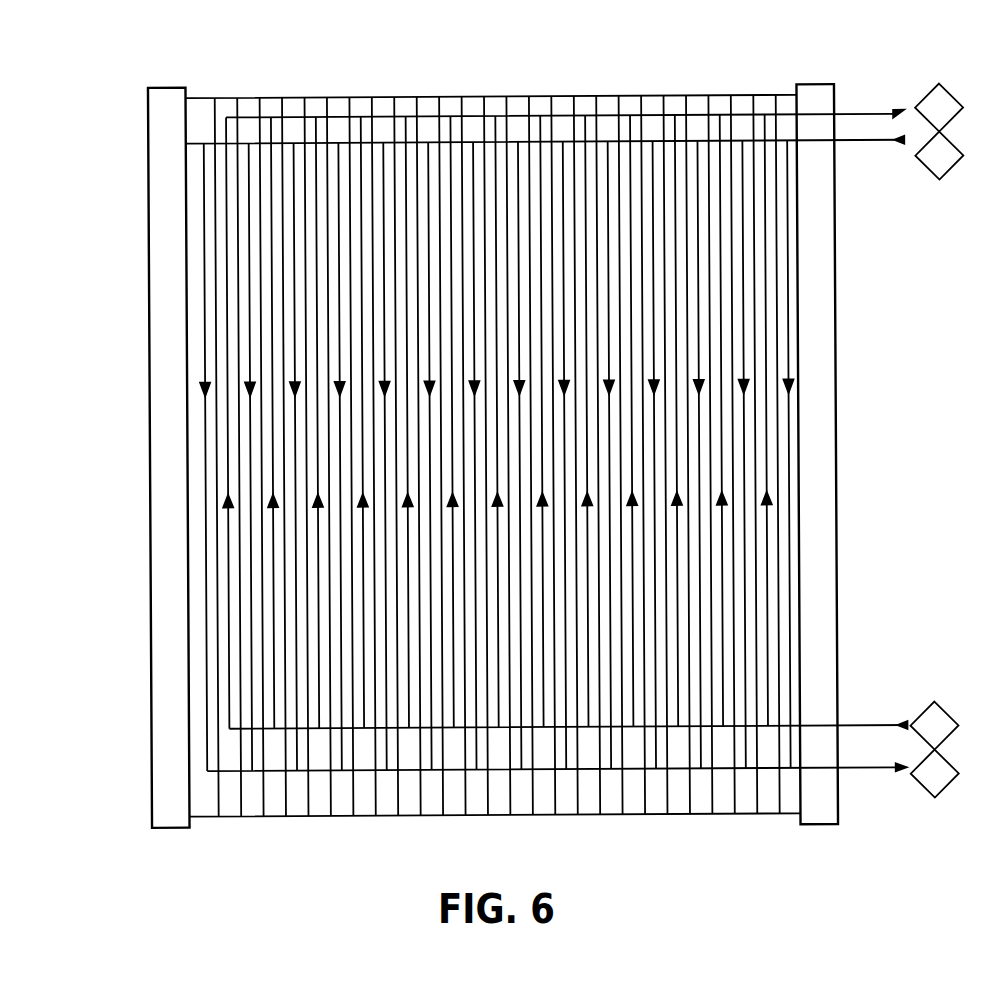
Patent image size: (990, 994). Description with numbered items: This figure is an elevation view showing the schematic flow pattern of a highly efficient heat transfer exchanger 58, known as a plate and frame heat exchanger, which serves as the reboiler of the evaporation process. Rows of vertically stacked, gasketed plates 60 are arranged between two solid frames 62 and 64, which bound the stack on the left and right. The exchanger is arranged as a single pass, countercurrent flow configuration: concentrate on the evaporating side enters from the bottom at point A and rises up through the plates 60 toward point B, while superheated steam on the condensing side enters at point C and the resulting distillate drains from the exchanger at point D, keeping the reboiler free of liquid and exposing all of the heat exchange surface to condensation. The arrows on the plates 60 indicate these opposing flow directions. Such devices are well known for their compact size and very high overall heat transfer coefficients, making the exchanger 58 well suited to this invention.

The heat transfer exchanger 58 is at (507, 444).
The gasketed plates 60 is at (777, 320).
The solid frame 62 is at (165, 789).
The solid frame 64 is at (828, 796).